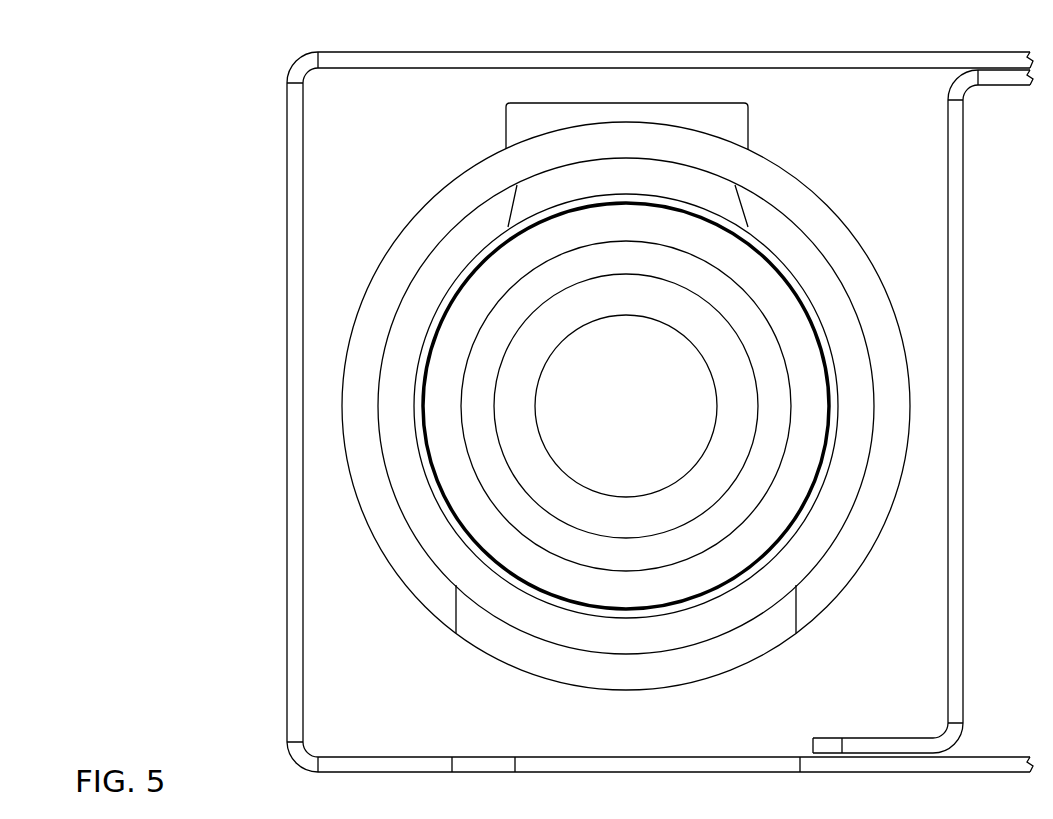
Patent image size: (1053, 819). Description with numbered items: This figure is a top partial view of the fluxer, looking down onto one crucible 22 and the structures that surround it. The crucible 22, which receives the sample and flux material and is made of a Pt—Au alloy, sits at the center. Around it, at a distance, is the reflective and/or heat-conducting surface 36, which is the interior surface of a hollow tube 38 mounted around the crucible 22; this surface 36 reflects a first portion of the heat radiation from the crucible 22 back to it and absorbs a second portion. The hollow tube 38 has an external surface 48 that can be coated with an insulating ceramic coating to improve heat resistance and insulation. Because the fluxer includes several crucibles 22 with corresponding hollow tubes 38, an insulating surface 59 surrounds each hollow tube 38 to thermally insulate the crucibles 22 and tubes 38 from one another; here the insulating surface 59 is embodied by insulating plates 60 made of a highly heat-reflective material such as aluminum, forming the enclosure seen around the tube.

The insulating plate 60 is at (297, 123).
The hollow tube 38 is at (778, 187).
The external surface 48 is at (828, 205).
The reflective and/or heat-conducting surface 36 is at (845, 287).
The crucible 22 is at (826, 449).
The insulating surface 59 is at (274, 429).